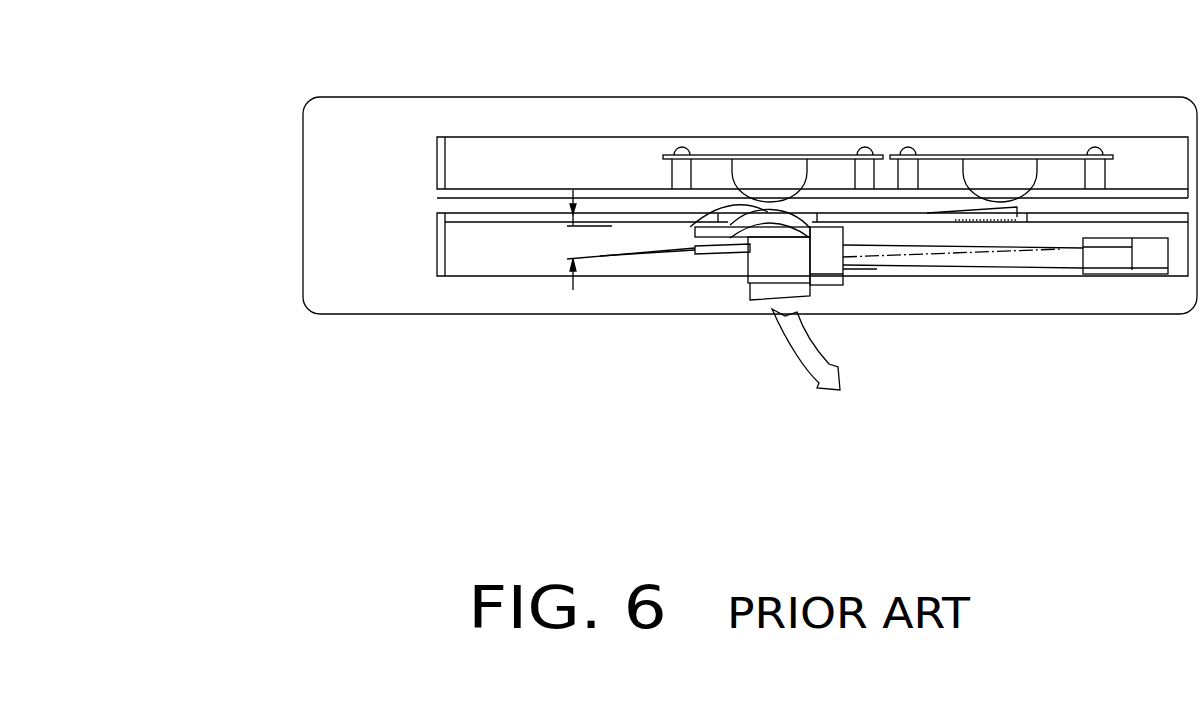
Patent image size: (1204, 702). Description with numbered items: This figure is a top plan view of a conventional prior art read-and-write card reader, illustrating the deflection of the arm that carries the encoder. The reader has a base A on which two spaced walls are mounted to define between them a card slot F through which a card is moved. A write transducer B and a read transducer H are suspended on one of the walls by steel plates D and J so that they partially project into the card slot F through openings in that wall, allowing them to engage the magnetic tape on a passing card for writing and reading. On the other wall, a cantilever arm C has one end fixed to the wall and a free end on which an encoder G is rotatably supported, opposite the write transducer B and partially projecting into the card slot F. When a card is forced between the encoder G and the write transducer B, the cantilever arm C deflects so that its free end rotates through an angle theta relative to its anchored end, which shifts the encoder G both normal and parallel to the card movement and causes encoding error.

The base A is at (677, 307).
The write transducer B is at (795, 173).
The cantilever arm C is at (877, 268).
The steel plate D is at (833, 155).
The card slot F is at (445, 207).
The encoder G is at (692, 224).
The read transducer H is at (1010, 170).
The steel plate J is at (938, 157).